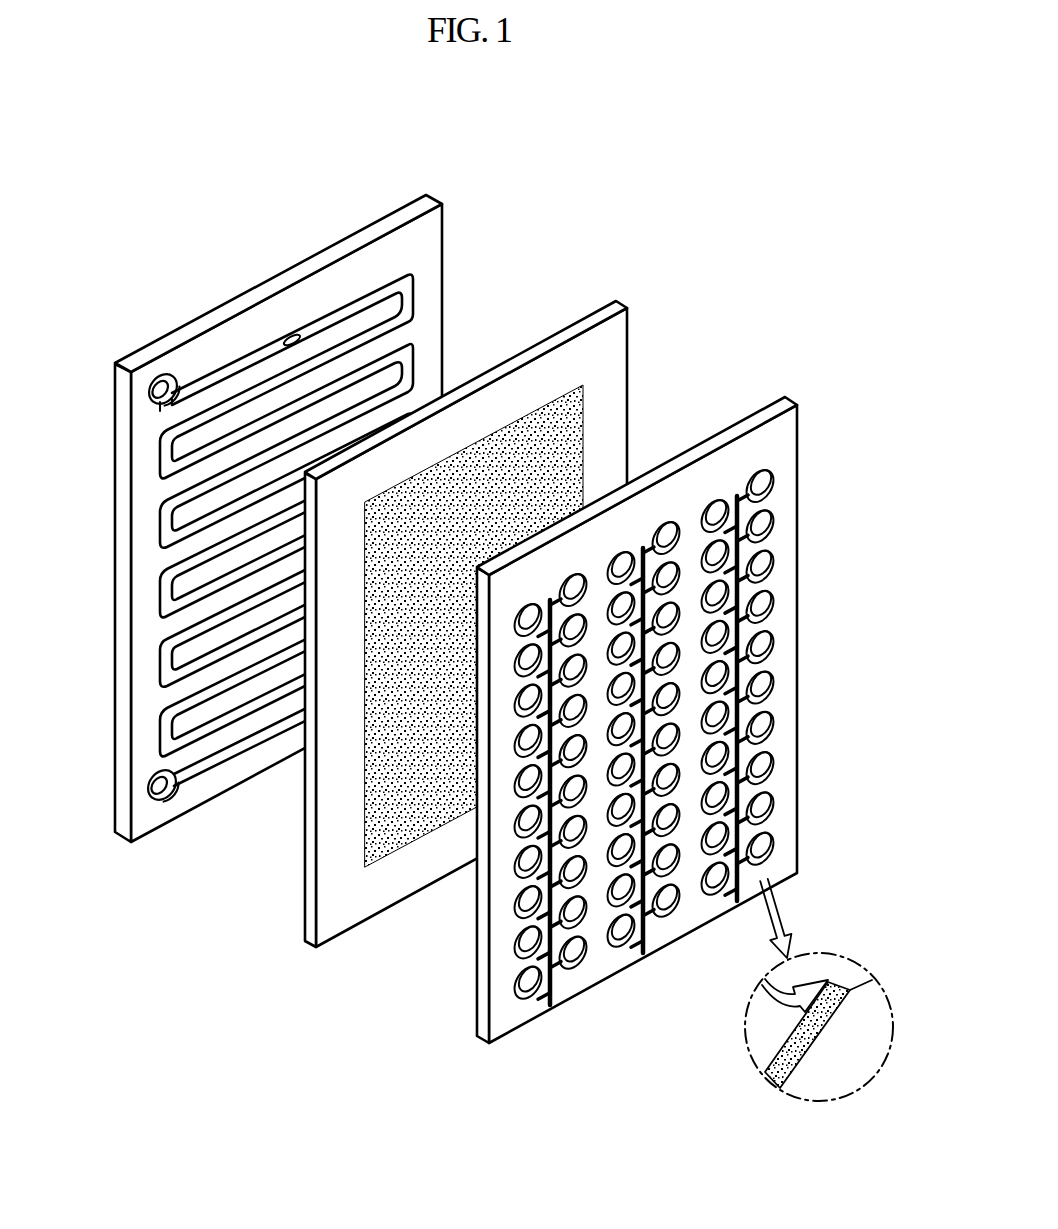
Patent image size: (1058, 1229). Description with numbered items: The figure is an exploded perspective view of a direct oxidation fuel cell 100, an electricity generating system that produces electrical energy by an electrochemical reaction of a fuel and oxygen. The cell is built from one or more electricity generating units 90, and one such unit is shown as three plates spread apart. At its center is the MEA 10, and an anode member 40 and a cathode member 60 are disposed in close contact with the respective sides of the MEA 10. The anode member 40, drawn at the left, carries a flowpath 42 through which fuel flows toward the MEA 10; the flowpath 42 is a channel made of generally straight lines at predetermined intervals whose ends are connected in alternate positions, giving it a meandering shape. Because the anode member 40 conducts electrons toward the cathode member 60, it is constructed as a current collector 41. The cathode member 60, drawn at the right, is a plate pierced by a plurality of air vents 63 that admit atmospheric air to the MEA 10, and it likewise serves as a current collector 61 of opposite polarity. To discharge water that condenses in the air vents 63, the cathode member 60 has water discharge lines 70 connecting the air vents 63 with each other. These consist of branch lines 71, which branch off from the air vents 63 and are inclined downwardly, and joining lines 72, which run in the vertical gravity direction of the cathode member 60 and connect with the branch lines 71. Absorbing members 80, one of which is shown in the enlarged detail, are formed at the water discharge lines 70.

The direct oxidation fuel cell 100 is at (538, 131).
The electricity generating unit 90 is at (726, 222).
The anode member 40 is at (98, 810).
The current collector 41 is at (207, 790).
The flowpath 42 is at (298, 339).
The MEA 10 is at (285, 908).
The cathode member 60 is at (462, 1010).
The current collector 61 is at (598, 977).
The air vents 63 is at (790, 485).
The water discharge lines 70 is at (760, 557).
The branch lines 71 is at (767, 646).
The joining lines 72 is at (764, 668).
The absorbing members 80 is at (770, 1050).